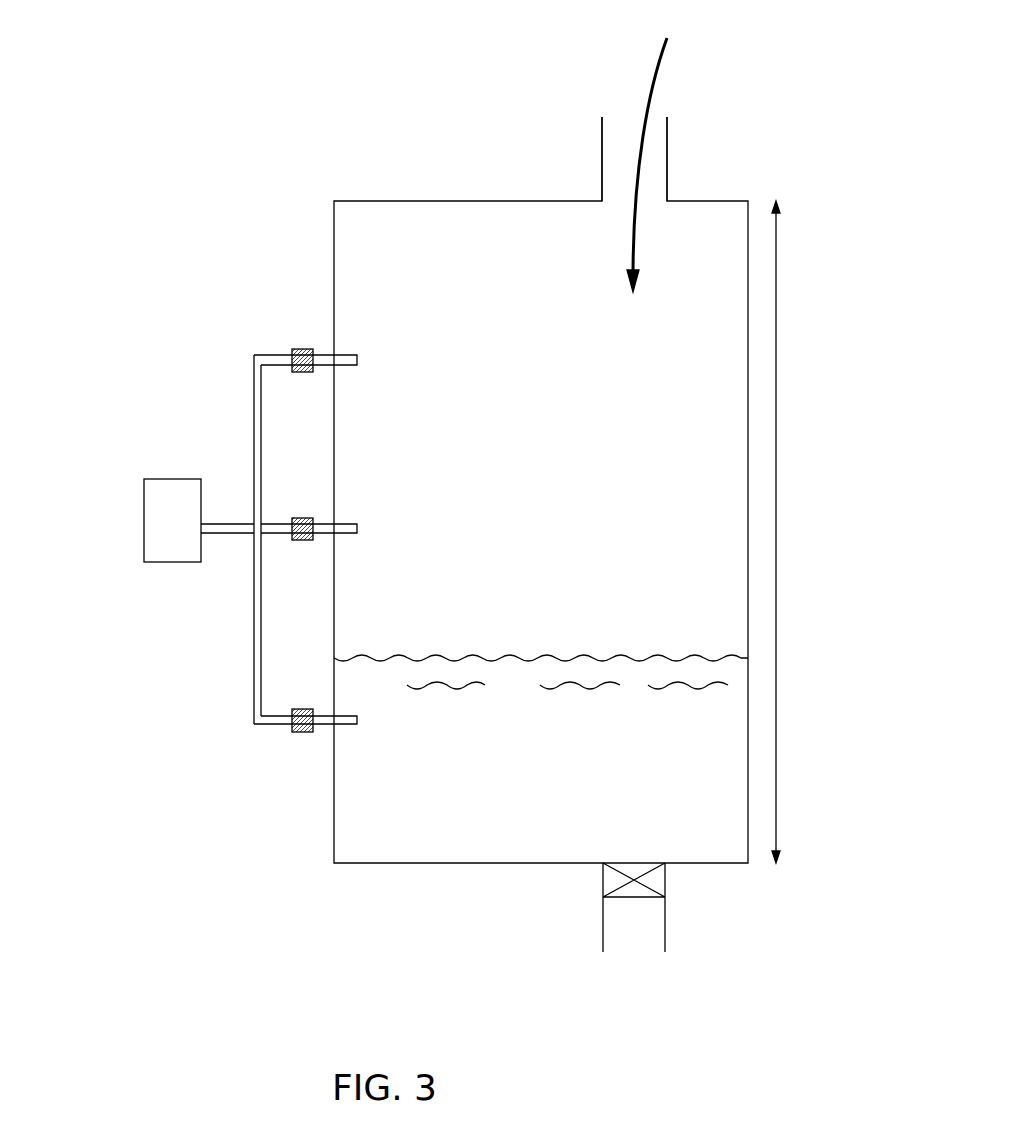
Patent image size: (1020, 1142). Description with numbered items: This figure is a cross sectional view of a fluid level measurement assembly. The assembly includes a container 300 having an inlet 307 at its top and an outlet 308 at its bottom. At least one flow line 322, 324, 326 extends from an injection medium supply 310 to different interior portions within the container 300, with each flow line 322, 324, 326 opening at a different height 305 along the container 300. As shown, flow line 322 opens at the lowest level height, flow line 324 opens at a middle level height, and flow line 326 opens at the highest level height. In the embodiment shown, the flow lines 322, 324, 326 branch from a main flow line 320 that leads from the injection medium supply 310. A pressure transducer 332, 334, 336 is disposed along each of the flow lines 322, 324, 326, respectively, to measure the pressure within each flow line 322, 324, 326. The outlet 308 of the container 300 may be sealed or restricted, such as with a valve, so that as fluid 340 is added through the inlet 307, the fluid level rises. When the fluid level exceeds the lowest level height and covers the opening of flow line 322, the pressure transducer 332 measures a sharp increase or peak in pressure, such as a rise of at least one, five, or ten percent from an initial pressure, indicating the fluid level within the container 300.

The container 300 is at (419, 201).
The height 305 is at (777, 507).
The inlet 307 is at (668, 161).
The outlet 308 is at (614, 938).
The injection medium supply 310 is at (172, 479).
The main flow line 320 is at (228, 536).
The flow line 322 is at (370, 734).
The flow line 324 is at (370, 544).
The flow line 326 is at (370, 376).
The pressure transducer 332 is at (302, 732).
The pressure transducer 334 is at (302, 518).
The pressure transducer 336 is at (302, 349).
The fluid 340 is at (648, 34).